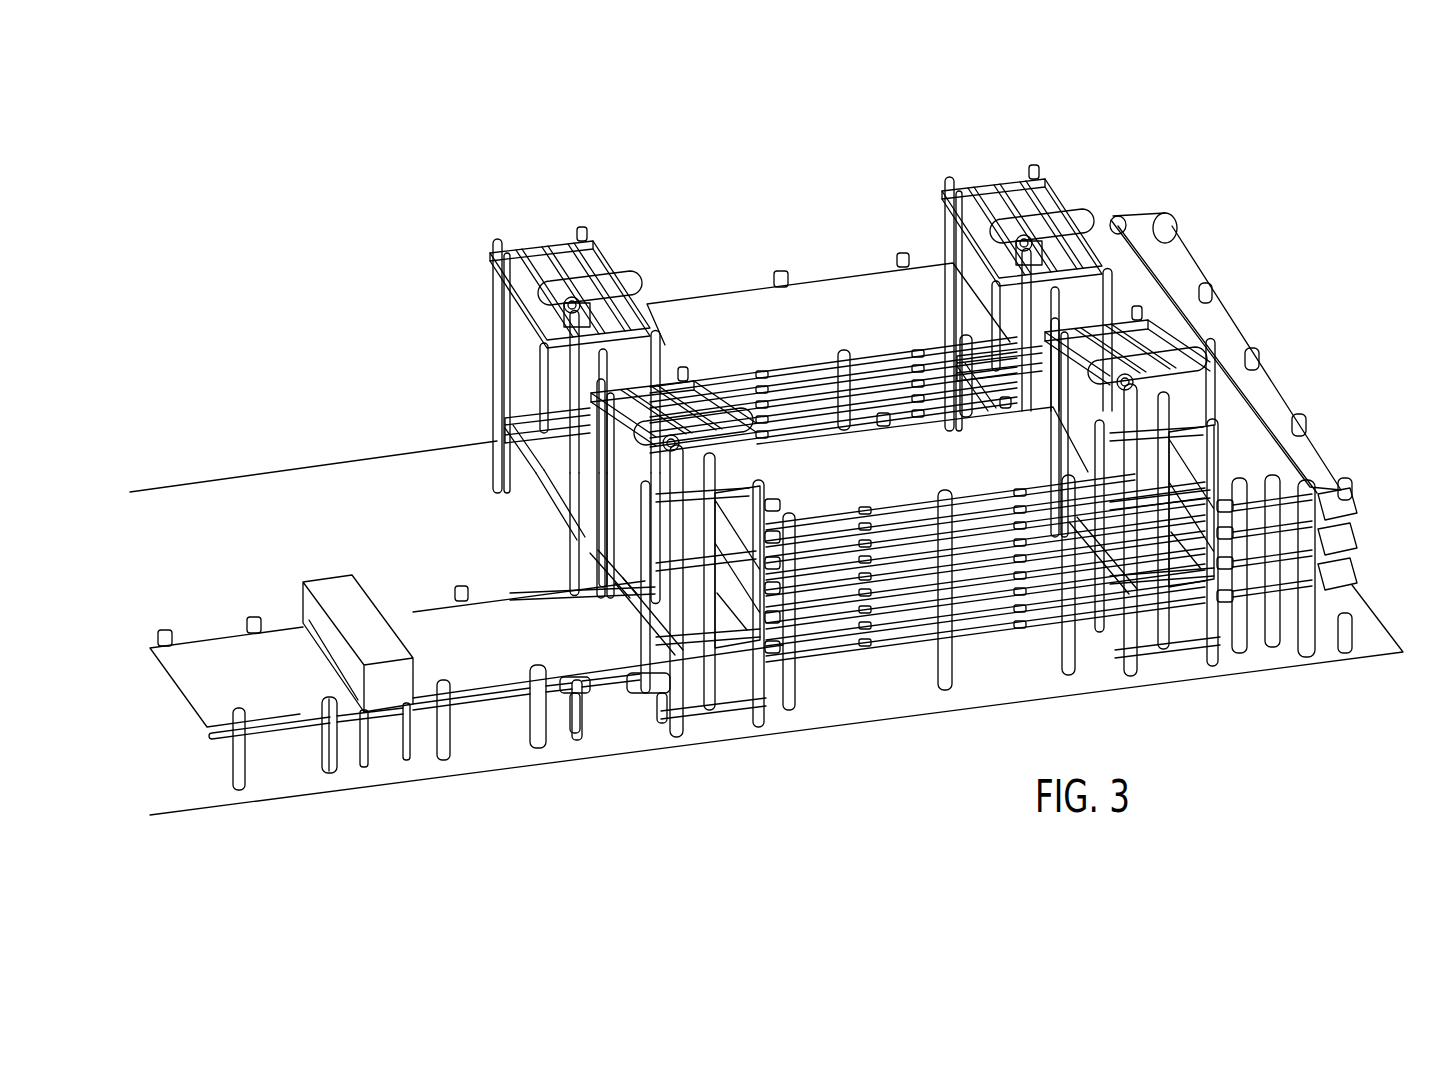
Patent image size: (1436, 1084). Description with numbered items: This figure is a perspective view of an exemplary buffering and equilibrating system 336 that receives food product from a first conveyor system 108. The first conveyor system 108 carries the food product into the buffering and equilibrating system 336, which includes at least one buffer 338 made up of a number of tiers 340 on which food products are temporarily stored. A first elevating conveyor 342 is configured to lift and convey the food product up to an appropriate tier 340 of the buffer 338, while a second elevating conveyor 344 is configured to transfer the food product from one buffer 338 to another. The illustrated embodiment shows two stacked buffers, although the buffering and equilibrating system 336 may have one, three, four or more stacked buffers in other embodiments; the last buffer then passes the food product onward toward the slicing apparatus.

The first conveyor system 108 is at (225, 657).
The buffering and equilibrating system 336 is at (671, 210).
The buffer 338 is at (1038, 631).
The tier 340 is at (850, 650).
The first elevating conveyor 342 is at (722, 720).
The second elevating conveyor 344 is at (1227, 660).